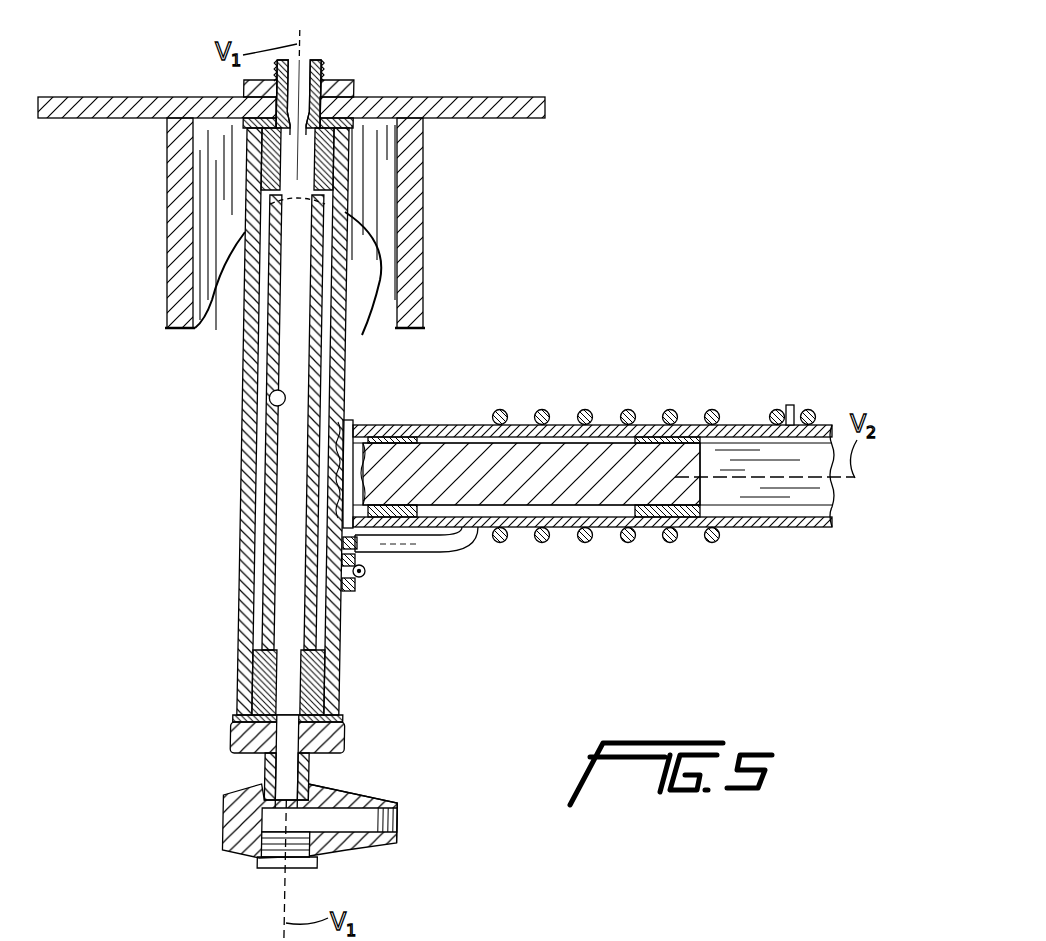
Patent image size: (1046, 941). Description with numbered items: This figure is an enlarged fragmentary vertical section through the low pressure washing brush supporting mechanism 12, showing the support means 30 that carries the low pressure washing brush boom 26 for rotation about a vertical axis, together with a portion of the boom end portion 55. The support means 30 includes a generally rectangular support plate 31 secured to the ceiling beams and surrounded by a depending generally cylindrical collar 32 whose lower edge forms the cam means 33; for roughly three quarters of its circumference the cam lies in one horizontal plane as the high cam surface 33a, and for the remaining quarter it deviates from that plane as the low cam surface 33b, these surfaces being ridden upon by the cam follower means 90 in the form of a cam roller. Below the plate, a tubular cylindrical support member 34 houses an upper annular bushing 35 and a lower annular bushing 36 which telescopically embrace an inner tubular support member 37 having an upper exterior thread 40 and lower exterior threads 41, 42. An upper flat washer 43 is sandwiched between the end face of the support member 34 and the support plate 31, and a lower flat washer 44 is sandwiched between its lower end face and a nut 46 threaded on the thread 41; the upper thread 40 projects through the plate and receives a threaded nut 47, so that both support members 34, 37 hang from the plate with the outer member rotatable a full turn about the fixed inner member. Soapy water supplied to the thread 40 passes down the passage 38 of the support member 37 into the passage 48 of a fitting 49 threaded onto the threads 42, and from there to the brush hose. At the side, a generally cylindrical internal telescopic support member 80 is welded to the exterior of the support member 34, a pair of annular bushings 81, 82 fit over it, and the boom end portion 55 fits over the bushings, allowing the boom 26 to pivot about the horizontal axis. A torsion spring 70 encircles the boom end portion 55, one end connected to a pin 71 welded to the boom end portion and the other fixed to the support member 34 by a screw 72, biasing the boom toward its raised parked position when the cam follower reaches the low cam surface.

The low pressure washing brush supporting mechanism 12 is at (688, 92).
The low pressure washing brush boom 26 is at (770, 590).
The support means 30 is at (143, 183).
The support plate 31 is at (505, 97).
The collar 32 is at (425, 195).
The cam means 33 is at (420, 333).
The cam surface 33a is at (172, 330).
The cam surface 33b is at (221, 303).
The tubular cylindrical support member 34 is at (240, 552).
The upper annular bushing 35 is at (323, 153).
The lower annular bushing 36 is at (343, 665).
The tubular support member 37 is at (262, 404).
The passage 38 is at (303, 452).
The upper exterior thread 40 is at (323, 65).
The lower exterior thread 41 is at (340, 744).
The lower exterior thread 42 is at (263, 783).
The upper flat washer 43 is at (228, 96).
The lower flat washer 44 is at (343, 720).
The nut 46 is at (232, 728).
The threaded nut 47 is at (350, 95).
The passage 48 is at (366, 808).
The fitting 49 is at (232, 850).
The boom end portion 55 is at (480, 422).
The torsion spring 70 is at (588, 411).
The pin 71 is at (796, 406).
The screw 72 is at (357, 580).
The internal telescopic support member 80 is at (478, 497).
The annular bushing 81 is at (400, 424).
The annular bushing 82 is at (657, 428).
The cam follower means 90 is at (461, 933).